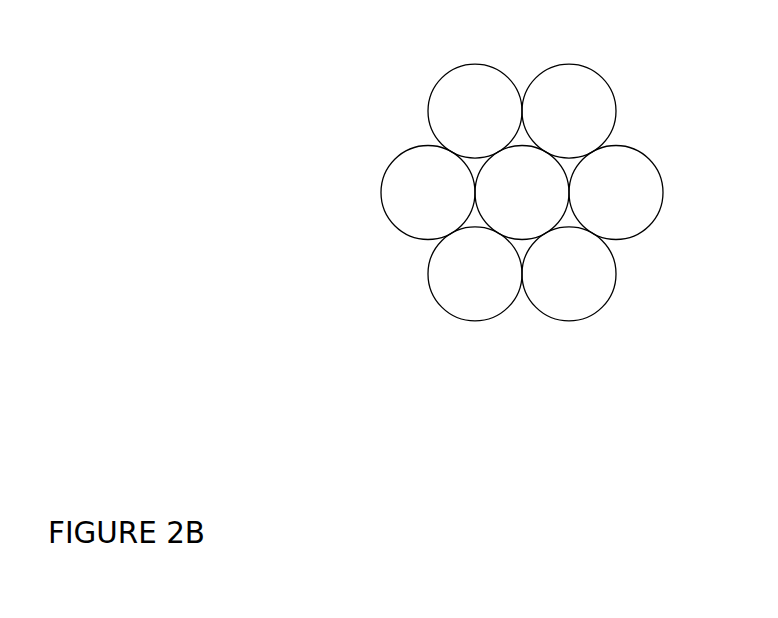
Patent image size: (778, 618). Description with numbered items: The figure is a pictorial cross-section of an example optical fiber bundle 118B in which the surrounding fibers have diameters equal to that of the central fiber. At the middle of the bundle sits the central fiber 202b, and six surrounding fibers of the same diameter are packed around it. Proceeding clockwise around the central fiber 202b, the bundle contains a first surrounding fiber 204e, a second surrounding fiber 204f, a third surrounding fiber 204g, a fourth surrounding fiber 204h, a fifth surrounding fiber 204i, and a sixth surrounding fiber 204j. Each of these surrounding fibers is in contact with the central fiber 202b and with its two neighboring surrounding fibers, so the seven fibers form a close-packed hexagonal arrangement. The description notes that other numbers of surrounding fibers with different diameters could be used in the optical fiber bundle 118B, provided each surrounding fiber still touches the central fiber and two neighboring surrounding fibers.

The optical fiber bundle 118B is at (152, 508).
The central fiber 202b is at (522, 193).
The first surrounding fiber 204e is at (475, 111).
The second surrounding fiber 204f is at (569, 111).
The third surrounding fiber 204g is at (616, 193).
The fourth surrounding fiber 204h is at (569, 274).
The fifth surrounding fiber 204i is at (475, 274).
The sixth surrounding fiber 204j is at (428, 193).